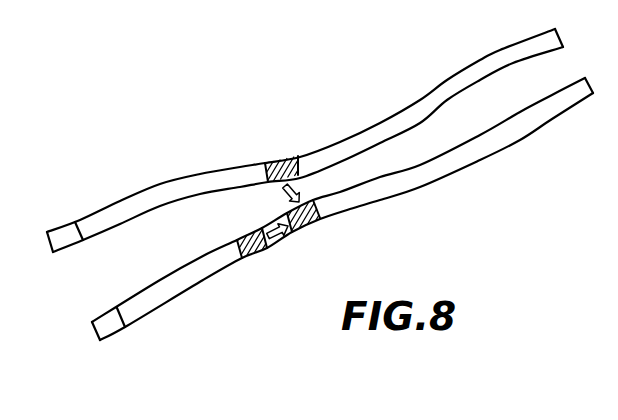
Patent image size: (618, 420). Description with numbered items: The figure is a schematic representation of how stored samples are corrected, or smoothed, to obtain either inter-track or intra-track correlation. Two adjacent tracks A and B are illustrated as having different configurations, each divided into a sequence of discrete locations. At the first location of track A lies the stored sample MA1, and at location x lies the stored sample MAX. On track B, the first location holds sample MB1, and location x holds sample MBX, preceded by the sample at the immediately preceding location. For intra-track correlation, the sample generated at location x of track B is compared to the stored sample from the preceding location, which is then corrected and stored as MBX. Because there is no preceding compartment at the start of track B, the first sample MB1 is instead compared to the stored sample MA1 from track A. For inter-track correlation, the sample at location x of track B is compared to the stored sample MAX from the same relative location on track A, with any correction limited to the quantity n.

The track A is at (47, 233).
The track B is at (92, 322).
The stored sample m_A1 MA1 is at (63, 227).
The stored sample m_Ax MAX is at (288, 147).
The sample at first location of track B MB1 is at (112, 328).
The stored sample m_Bx MBX is at (305, 229).